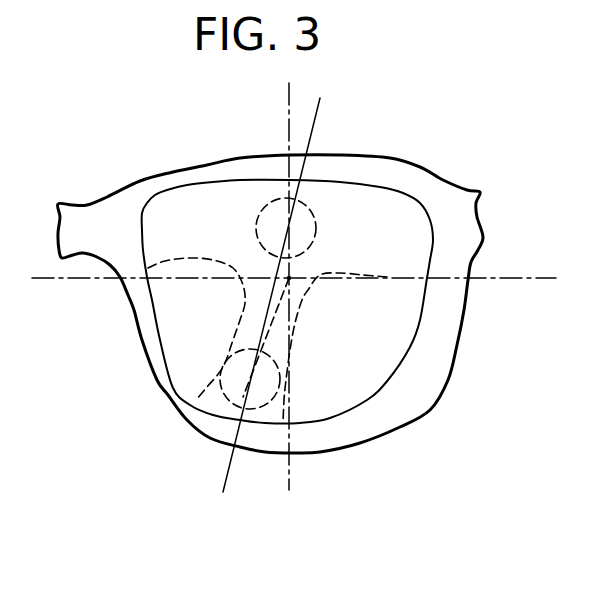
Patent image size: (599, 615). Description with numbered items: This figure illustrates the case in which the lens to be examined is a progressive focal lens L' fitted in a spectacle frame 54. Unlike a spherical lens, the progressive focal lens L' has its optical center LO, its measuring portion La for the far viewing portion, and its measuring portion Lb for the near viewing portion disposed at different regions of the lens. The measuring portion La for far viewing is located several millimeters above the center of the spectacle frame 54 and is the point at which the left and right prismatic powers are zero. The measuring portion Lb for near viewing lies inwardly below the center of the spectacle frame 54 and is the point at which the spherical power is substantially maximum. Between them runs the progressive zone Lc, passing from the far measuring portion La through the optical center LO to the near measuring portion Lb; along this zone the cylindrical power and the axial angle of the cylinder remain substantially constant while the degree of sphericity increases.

The spectacle frame 54 is at (117, 205).
The measuring portion for far viewing portion La is at (268, 202).
The measuring portion for near viewing portion Lb is at (256, 408).
The progressive zone Lc is at (257, 337).
The optical center LO is at (289, 278).
The progressive focal lens L' is at (304, 336).